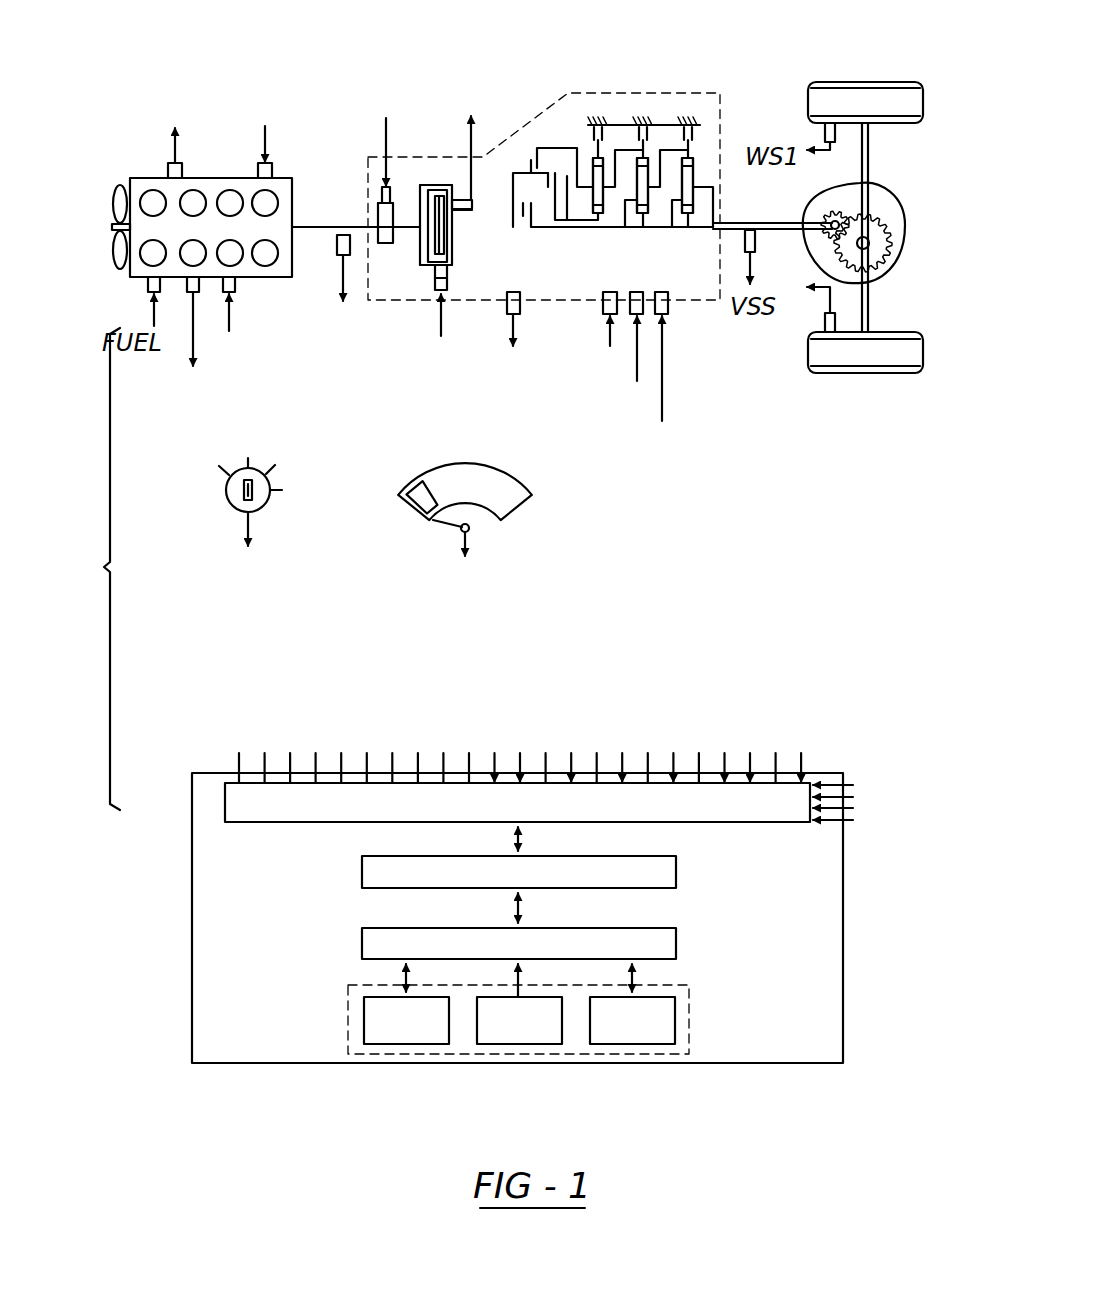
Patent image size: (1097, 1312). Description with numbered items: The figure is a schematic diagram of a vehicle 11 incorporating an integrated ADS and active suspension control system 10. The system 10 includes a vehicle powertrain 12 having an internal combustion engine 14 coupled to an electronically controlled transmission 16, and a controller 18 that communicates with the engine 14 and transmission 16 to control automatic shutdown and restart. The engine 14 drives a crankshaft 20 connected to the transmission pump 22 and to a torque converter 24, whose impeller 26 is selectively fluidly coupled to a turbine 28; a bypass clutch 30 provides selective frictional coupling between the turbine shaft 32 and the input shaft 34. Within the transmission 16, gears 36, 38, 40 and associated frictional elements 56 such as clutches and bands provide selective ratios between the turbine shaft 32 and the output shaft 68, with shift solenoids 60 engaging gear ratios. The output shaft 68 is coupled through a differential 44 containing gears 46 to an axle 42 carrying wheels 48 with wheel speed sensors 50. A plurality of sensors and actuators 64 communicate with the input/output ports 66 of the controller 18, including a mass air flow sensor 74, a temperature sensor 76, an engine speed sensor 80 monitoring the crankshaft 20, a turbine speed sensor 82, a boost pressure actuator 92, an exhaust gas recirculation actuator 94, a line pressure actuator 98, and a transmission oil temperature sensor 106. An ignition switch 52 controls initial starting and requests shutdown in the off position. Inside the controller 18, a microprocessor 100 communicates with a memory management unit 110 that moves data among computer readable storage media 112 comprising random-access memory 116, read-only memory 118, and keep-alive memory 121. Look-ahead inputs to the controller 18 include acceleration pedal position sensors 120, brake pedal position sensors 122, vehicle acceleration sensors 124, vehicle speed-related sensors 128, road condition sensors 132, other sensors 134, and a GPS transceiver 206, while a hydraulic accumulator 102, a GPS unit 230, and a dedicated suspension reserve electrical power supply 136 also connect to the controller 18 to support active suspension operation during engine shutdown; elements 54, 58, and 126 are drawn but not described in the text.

The integrated ADS and active suspension control system 10 is at (95, 569).
The vehicle 11 is at (100, 37).
The vehicle powertrain 12 is at (441, 367).
The internal combustion engine 14 is at (263, 277).
The transmission 16 is at (582, 300).
The controller 18 is at (752, 1063).
The crankshaft 20 is at (330, 226).
The transmission pump 22 is at (379, 218).
The torque converter 24 is at (421, 290).
The impeller 26 is at (420, 196).
The turbine 28 is at (445, 243).
The bypass clutch 30 is at (440, 185).
The turbine shaft 32 is at (478, 226).
The input shaft 34 is at (420, 232).
The gear 36 is at (603, 200).
The gear 38 is at (648, 200).
The gear 40 is at (675, 203).
The axle 42 is at (870, 158).
The differential 44 is at (900, 214).
The gears 46 is at (893, 255).
The wheels 48 is at (880, 373).
The wheel speed sensors 50 is at (813, 327).
The ignition switch 52 is at (290, 527).
The gear selector 54 is at (545, 527).
The frictional elements 56 is at (585, 137).
The transmission case 58 is at (620, 125).
The shift solenoids 60 is at (632, 414).
The sensors and actuators 64 is at (312, 683).
The input/output ports 66 is at (300, 823).
The output shaft 68 is at (788, 222).
The mass air flow sensor 74 is at (168, 166).
The temperature sensor 76 is at (193, 338).
The engine speed sensor 80 is at (337, 278).
The turbine speed sensor 82 is at (462, 199).
The turbocharger boost pressure actuator 92 is at (229, 314).
The exhaust gas recirculation actuator 94 is at (259, 168).
The line pressure actuator 98 is at (380, 195).
The microprocessor 100 is at (676, 870).
The hydraulic accumulator 102 is at (853, 773).
The temperature sensor 106 is at (520, 312).
The memory management unit 110 is at (676, 940).
The computer readable storage media 112 is at (689, 1010).
The random-access memory 116 is at (620, 1044).
The read-only memory 118 is at (540, 1044).
The acceleration pedal position sensors 120 is at (801, 753).
The keep-alive memory 121 is at (415, 1044).
The brake pedal position sensors 122 is at (724, 753).
The vehicle acceleration sensors 124 is at (494, 753).
The input 126 is at (673, 753).
The vehicle speed-related sensors 128 is at (520, 753).
The road condition sensors 132 is at (622, 753).
The other sensors 134 is at (750, 753).
The suspension reserve electrical power supply 136 is at (855, 810).
The GPS transceiver 206 is at (571, 753).
The GPS unit 230 is at (855, 797).